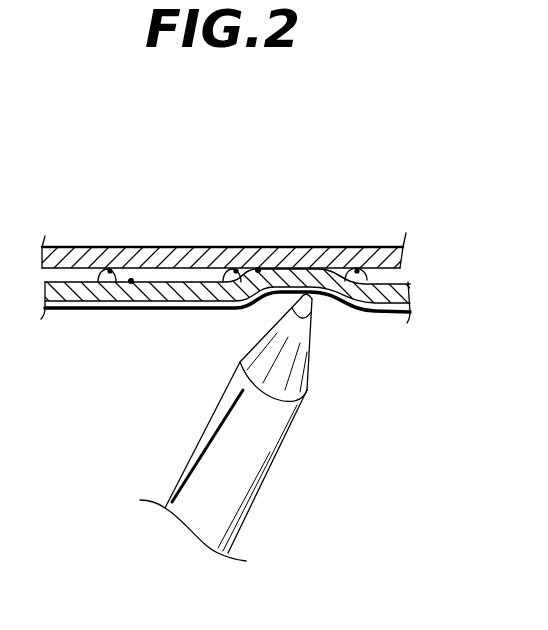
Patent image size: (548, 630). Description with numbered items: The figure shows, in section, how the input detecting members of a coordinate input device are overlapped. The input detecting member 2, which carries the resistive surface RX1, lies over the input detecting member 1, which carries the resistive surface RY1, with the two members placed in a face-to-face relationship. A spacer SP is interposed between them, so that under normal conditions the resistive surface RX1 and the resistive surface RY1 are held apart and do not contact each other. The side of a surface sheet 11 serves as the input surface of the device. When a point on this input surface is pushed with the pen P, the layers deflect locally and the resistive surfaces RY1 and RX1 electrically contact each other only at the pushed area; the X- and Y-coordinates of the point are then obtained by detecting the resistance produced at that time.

The input detecting member 1 is at (92, 303).
The input detecting member 2 is at (65, 247).
The surface sheet 11 is at (190, 309).
The spacer SP is at (110, 270).
The resistive surface RX1 is at (259, 268).
The resistive surface RY1 is at (131, 284).
The pen P is at (255, 437).